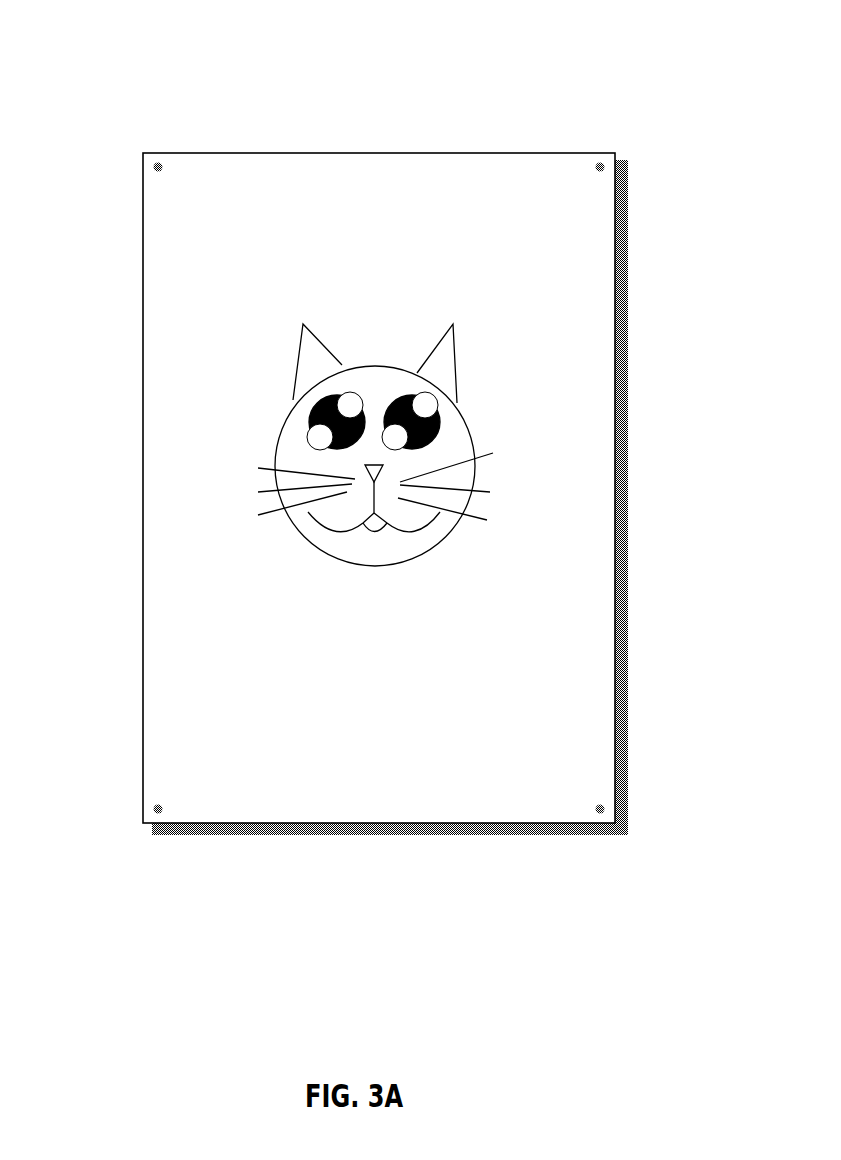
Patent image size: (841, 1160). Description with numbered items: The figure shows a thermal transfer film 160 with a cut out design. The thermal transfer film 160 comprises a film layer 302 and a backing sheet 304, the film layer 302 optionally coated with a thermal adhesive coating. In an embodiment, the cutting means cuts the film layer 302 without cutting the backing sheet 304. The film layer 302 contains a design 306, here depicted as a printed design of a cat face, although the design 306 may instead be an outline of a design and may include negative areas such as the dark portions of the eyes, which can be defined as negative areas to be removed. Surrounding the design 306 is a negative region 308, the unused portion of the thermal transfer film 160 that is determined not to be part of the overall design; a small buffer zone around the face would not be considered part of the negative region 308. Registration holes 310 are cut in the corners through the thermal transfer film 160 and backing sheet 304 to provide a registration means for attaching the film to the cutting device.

The thermal transfer film 160 is at (389, 507).
The film layer 302 is at (498, 827).
The backing sheet 304 is at (628, 665).
The design 306 is at (247, 447).
The negative region 308 is at (348, 757).
The registration holes 310 is at (142, 160).